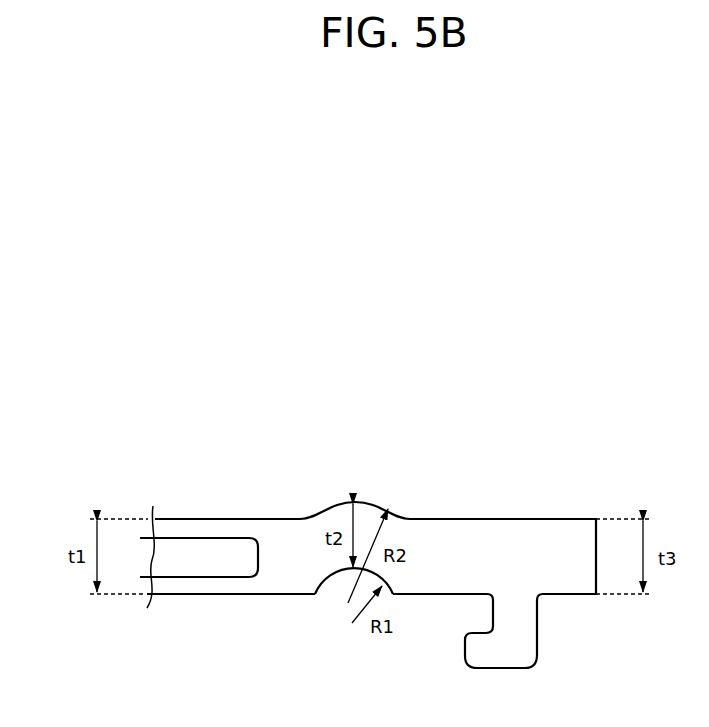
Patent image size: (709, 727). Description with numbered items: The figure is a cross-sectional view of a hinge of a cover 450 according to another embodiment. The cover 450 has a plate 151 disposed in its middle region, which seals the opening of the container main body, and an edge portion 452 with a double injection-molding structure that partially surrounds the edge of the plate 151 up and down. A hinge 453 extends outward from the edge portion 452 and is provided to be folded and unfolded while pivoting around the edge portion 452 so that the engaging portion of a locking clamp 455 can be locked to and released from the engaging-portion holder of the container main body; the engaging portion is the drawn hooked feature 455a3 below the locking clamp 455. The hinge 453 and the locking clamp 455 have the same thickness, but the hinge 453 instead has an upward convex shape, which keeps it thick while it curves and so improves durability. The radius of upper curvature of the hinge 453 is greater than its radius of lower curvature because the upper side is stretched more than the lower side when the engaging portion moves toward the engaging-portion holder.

The cover 450 is at (157, 383).
The edge portion 452 is at (217, 519).
The hinge 453 is at (335, 502).
The locking clamp 455 is at (555, 519).
The plate 151 is at (212, 578).
The protruding tab 455a3 is at (470, 650).